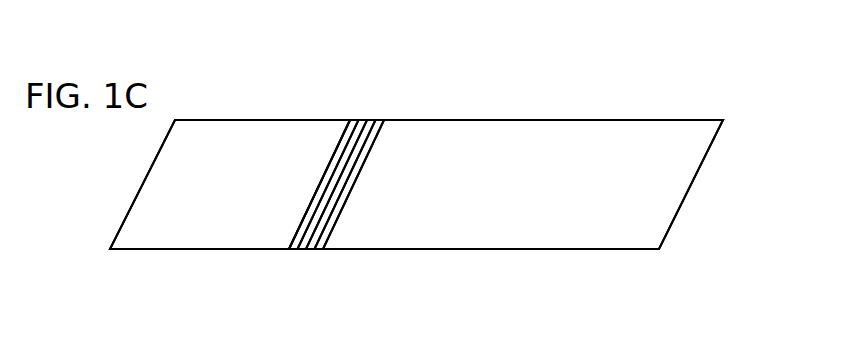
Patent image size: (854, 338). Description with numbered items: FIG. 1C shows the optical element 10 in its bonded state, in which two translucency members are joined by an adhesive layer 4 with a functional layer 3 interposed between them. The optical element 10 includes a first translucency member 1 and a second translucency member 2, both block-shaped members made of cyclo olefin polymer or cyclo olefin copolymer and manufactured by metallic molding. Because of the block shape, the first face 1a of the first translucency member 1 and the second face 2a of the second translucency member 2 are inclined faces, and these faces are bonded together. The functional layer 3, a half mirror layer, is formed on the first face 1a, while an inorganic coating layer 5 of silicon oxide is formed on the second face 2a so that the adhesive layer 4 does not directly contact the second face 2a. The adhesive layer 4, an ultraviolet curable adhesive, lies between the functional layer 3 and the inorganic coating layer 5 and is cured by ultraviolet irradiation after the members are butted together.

The optical element 10 is at (627, 117).
The first translucency member 1 is at (477, 238).
The first face 1a is at (337, 221).
The second translucency member 2 is at (173, 240).
The second face 2a is at (302, 230).
The functional layer 3 is at (379, 130).
The adhesive layer 4 is at (310, 240).
The inorganic coating layer 5 is at (298, 234).